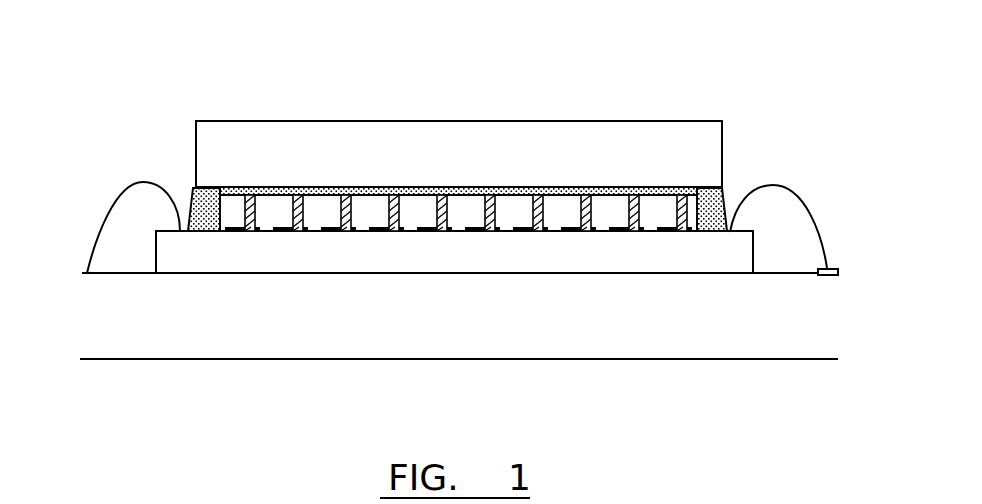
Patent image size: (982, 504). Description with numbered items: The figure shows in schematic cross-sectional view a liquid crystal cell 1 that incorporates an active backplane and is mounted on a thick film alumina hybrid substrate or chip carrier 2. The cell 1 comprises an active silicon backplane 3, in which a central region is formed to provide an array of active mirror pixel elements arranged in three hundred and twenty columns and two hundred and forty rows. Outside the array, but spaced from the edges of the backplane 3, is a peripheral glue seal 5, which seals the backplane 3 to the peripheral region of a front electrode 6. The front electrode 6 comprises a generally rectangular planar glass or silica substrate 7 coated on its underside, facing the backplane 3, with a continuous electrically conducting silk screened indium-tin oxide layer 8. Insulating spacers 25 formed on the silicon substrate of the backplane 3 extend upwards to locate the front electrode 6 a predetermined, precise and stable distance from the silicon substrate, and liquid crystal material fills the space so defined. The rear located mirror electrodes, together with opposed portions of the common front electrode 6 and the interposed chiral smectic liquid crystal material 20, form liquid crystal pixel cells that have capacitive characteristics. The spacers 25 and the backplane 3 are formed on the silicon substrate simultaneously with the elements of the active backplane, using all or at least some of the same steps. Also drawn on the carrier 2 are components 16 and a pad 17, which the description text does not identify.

The liquid crystal cell 1 is at (425, 117).
The thick film alumina hybrid substrate 2 is at (437, 330).
The active silicon backplane 3 is at (438, 263).
The peripheral glue seal 5 is at (193, 193).
The front electrode 6 is at (501, 97).
The glass or silica substrate 7 is at (556, 158).
The indium-tin oxide layer 8 is at (372, 188).
The discrete component 16 is at (110, 198).
The pad 17 is at (832, 268).
The chiral smectic liquid crystal material 20 is at (467, 207).
The insulating spacers 25 is at (262, 207).